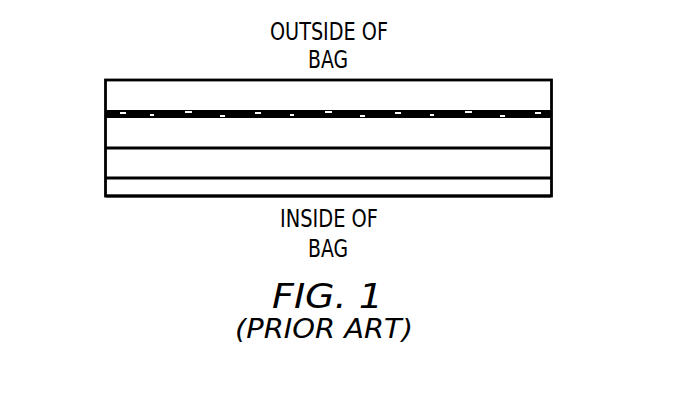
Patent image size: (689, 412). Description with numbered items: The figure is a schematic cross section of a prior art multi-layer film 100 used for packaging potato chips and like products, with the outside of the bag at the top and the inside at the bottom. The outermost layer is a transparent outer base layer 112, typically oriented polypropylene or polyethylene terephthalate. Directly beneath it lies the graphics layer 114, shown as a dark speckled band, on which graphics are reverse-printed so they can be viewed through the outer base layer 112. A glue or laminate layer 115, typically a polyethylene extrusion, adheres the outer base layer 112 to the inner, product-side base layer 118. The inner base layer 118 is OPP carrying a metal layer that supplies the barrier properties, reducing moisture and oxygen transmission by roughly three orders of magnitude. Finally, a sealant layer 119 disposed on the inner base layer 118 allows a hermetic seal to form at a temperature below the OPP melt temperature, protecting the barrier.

The multi-layer film 100 is at (119, 55).
The outer base layer 112 is at (500, 78).
The graphics layer 114 is at (104, 115).
The glue or laminate layer 115 is at (552, 128).
The inner base layer 118 is at (552, 163).
The sealant layer 119 is at (552, 192).